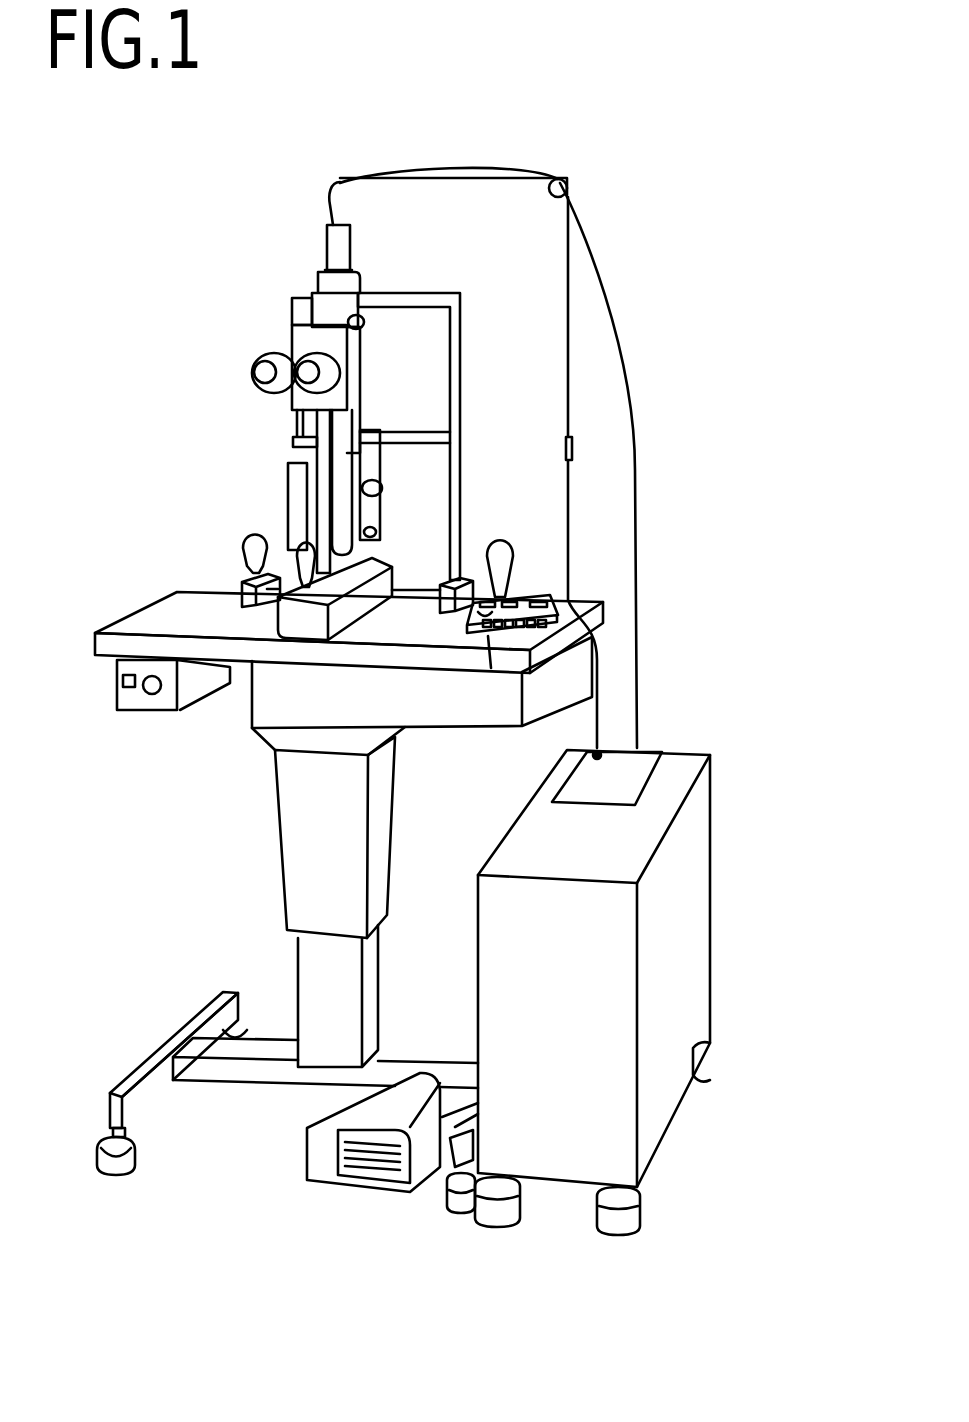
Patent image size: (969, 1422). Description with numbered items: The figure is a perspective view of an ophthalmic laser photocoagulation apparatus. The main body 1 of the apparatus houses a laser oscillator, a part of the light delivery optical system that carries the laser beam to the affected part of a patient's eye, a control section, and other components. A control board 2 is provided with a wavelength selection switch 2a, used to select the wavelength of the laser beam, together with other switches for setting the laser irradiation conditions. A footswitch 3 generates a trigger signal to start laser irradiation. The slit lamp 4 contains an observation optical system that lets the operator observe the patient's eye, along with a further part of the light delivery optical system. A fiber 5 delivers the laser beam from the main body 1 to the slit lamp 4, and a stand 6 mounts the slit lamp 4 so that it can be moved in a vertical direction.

The main body 1 is at (688, 843).
The control board 2 is at (532, 597).
The wavelength selection switch 2a is at (488, 645).
The footswitch 3 is at (367, 1167).
The slit lamp 4 is at (327, 473).
The fiber 5 is at (630, 437).
The stand 6 is at (333, 810).